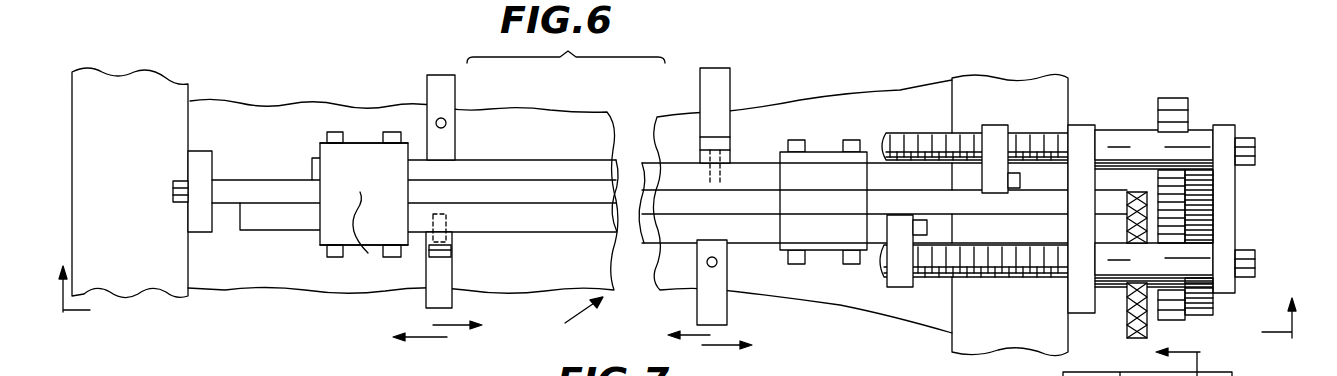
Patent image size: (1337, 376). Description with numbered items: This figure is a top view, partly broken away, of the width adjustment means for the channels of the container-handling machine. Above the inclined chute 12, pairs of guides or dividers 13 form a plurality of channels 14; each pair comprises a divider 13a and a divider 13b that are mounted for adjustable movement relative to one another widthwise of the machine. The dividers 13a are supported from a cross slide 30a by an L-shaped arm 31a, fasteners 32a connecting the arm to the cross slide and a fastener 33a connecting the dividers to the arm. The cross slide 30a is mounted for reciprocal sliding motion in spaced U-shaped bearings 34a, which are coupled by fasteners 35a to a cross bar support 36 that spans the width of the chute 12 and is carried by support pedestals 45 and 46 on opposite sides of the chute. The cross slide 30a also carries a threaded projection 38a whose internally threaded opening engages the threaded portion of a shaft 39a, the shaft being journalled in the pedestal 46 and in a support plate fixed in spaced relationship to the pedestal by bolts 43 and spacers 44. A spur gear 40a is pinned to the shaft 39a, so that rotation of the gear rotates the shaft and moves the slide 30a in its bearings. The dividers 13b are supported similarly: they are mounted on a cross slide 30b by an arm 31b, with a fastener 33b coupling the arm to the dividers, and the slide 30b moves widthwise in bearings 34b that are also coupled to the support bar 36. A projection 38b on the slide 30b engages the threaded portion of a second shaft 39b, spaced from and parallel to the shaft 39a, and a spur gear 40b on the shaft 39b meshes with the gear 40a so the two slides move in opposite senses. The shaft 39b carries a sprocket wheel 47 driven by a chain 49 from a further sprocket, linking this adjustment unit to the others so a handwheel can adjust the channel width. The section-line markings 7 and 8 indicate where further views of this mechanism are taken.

The section line 7- 7 is at (685, 316).
The section line 8- 8 is at (1147, 358).
The inclined chute 12 is at (578, 147).
The dividers 13 is at (437, 72).
The divider 13a is at (726, 88).
The divider 13b is at (433, 90).
The channels 14 is at (565, 338).
The cross slide 30a is at (480, 163).
The cross slide 30b is at (590, 217).
The L-shaped arm 31a is at (728, 156).
The arm 31b is at (457, 236).
The fasteners 32a is at (698, 116).
The fastener 33a is at (707, 264).
The fastener 33b is at (447, 120).
The U-shaped bearings 34a is at (327, 152).
The bearings 34b is at (335, 225).
The fasteners 35a is at (385, 133).
The cross bar support 36 is at (364, 219).
The threaded projection 38a is at (989, 130).
The projection 38b is at (905, 267).
The shaft 39a is at (1042, 140).
The shaft 39b is at (1055, 257).
The spur gear 40a is at (1151, 97).
The spur gear 40b is at (1170, 303).
The bolts 43 is at (1258, 150).
The spacers 44 is at (1202, 137).
The support pedestal 45 is at (208, 152).
The support pedestal 46 is at (1083, 272).
The sprocket wheel 47 is at (1124, 322).
The chain 49 is at (1133, 340).